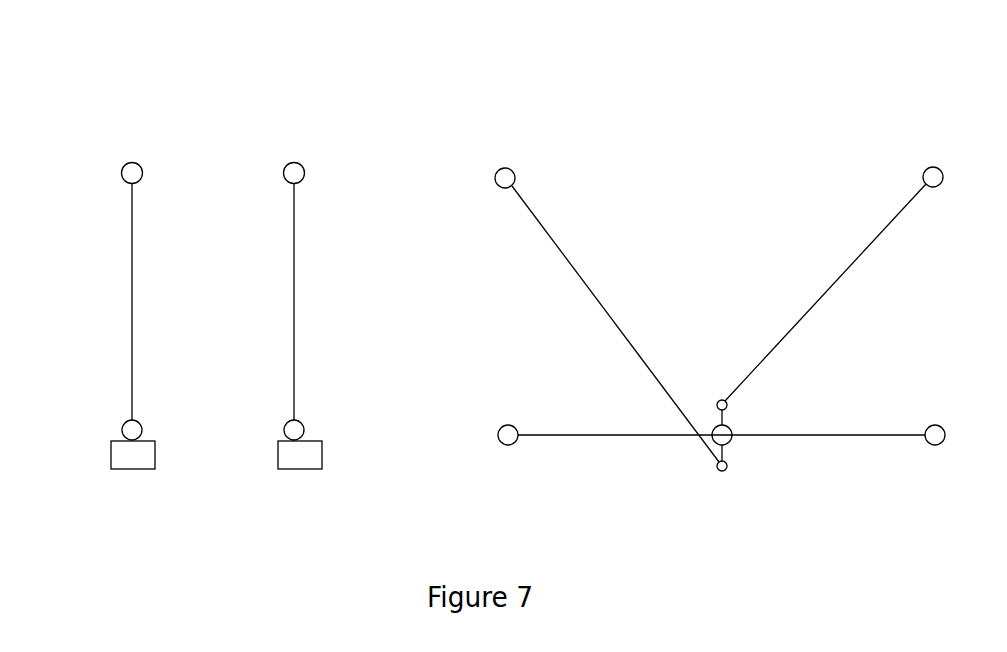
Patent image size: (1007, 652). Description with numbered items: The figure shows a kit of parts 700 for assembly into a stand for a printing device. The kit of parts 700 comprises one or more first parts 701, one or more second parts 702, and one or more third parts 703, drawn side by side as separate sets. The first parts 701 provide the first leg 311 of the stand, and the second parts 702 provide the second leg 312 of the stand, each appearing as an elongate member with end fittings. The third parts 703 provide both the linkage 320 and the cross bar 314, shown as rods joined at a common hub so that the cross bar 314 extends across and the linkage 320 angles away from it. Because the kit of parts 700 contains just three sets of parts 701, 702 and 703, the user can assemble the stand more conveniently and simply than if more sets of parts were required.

The kit of parts 700 is at (306, 72).
The first parts 701 is at (95, 184).
The second parts 702 is at (261, 184).
The third parts 703 is at (464, 186).
The first leg 311 is at (132, 325).
The second leg 312 is at (294, 327).
The cross bar 314 is at (578, 433).
The linkage 320 is at (750, 290).